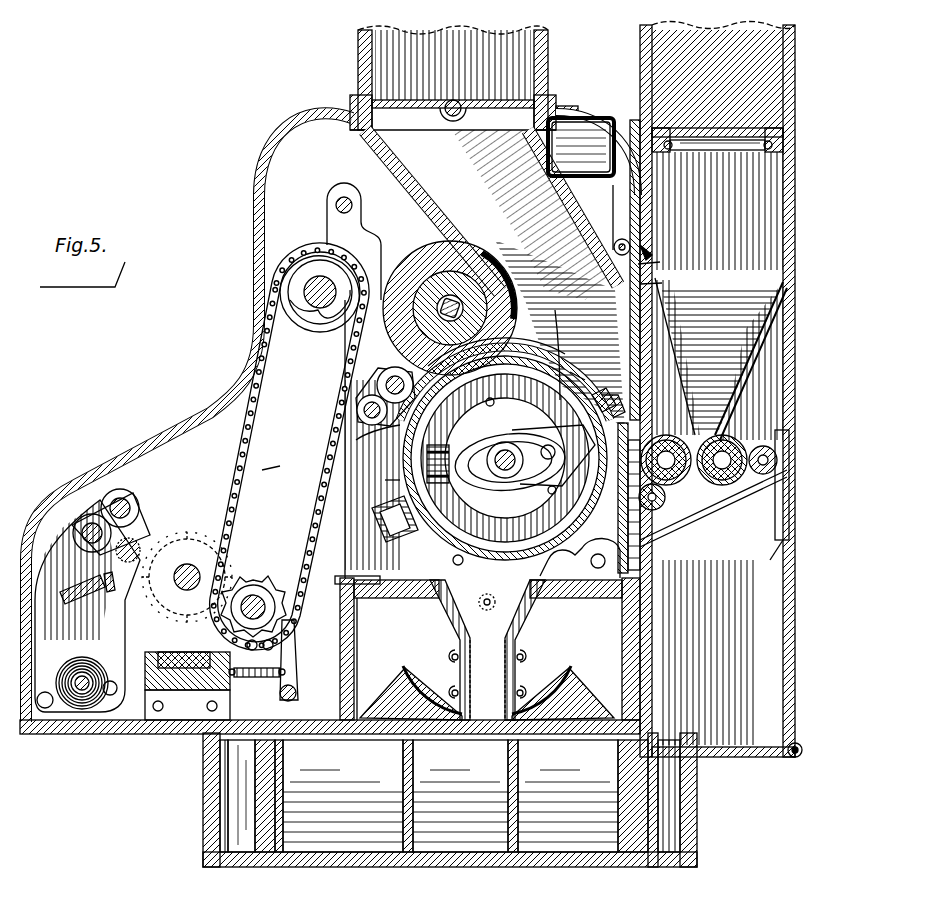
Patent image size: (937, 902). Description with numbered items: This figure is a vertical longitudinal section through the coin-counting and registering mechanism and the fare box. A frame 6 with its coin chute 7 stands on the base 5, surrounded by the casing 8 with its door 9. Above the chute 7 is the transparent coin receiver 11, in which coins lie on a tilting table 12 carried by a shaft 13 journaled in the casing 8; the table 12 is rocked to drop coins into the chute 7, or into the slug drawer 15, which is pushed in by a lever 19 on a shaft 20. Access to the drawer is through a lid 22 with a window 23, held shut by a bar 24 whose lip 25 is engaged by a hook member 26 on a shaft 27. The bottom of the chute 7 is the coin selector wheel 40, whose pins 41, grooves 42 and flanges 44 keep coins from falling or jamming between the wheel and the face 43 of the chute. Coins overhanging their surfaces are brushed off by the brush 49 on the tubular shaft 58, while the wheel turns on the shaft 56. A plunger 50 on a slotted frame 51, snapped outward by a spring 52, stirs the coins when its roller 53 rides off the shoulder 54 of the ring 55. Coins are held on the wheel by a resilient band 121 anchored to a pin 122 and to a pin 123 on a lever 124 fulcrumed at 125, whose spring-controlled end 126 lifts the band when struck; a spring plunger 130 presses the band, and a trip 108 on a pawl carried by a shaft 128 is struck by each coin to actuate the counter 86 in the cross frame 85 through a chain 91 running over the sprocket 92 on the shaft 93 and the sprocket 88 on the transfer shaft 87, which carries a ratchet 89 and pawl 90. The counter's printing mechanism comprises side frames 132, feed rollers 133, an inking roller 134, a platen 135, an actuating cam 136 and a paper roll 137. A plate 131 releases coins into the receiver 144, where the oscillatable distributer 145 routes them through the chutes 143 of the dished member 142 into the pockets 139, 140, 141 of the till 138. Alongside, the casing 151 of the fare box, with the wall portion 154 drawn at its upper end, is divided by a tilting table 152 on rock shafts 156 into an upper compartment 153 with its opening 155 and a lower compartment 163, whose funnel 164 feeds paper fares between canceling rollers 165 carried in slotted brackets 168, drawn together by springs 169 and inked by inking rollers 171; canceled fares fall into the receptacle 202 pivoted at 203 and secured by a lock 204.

The base 5 is at (342, 605).
The frame 6 is at (345, 548).
The coin chute 7 is at (432, 211).
The casing 8 is at (256, 197).
The door 9 is at (232, 372).
The coin receiver 11 is at (358, 62).
The tilting table 12 is at (470, 95).
The shaft 13 is at (452, 100).
The slug drawer 15 is at (581, 147).
The lever 19 is at (620, 194).
The shaft 20 is at (650, 248).
The lid 22 is at (568, 104).
The window 23 is at (600, 122).
The bar 24 is at (668, 252).
The lip 25 is at (672, 282).
The hook member 26 is at (573, 207).
The shaft 27 is at (677, 356).
The coin selector wheel 40 is at (580, 554).
The pins 41 is at (620, 346).
The grooves 42 is at (606, 388).
The face of coin chute 43 is at (668, 352).
The flanges 44 is at (565, 342).
The brush 49 is at (436, 252).
The plunger 50 is at (505, 458).
The slotted frame 51 is at (514, 475).
The spring 52 is at (433, 452).
The roller 53 is at (548, 450).
The shoulder 54 is at (576, 372).
The ring 55 is at (505, 458).
The shaft 56 is at (505, 470).
The tubular shaft 58 is at (470, 268).
The cross frame 85 is at (187, 668).
The counter 86 is at (190, 535).
The transfer shaft 87 is at (252, 580).
The sprocket 88 is at (270, 590).
The ratchet 89 is at (252, 677).
The pawl 90 is at (292, 654).
The chain 91 is at (255, 440).
The sprocket 92 is at (312, 325).
The shaft 93 is at (320, 275).
The trip 108 is at (505, 383).
The resilient band 121 is at (376, 476).
The pin 122 is at (452, 560).
The pin 123 is at (374, 442).
The lever 124 is at (383, 379).
The fulcrum 125 is at (357, 405).
The spring-controlled end 126 is at (548, 358).
The shaft 128 is at (283, 461).
The spring plunger 130 is at (400, 500).
The plate 131 is at (540, 600).
The side frames 132 is at (68, 525).
The feed rollers 133 is at (130, 500).
The inking roller 134 is at (148, 512).
The platen 135 is at (100, 578).
The actuating cam 136 is at (87, 606).
The paper roll 137 is at (92, 715).
The till 138 is at (442, 855).
The pocket 139 is at (568, 794).
The pocket 140 is at (460, 794).
The pocket 141 is at (343, 794).
The dished member 142 is at (578, 690).
The chutes 143 is at (398, 690).
The receiver 144 is at (448, 612).
The oscillatable distributer 145 is at (500, 676).
The casing 151 is at (785, 236).
The tilting table 152 is at (700, 133).
The upper compartment 153 is at (717, 79).
The wall 154 is at (644, 52).
The opening 155 is at (298, 895).
The rock shafts 156 is at (768, 152).
The compartment 163 is at (717, 211).
The funnel 164 is at (758, 335).
The canceling rollers 165 is at (700, 440).
The brackets 168 is at (700, 520).
The springs 169 is at (707, 652).
The inking rollers 171 is at (760, 445).
The receptacle 202 is at (723, 658).
The pivot 203 is at (790, 745).
The lock 204 is at (773, 560).